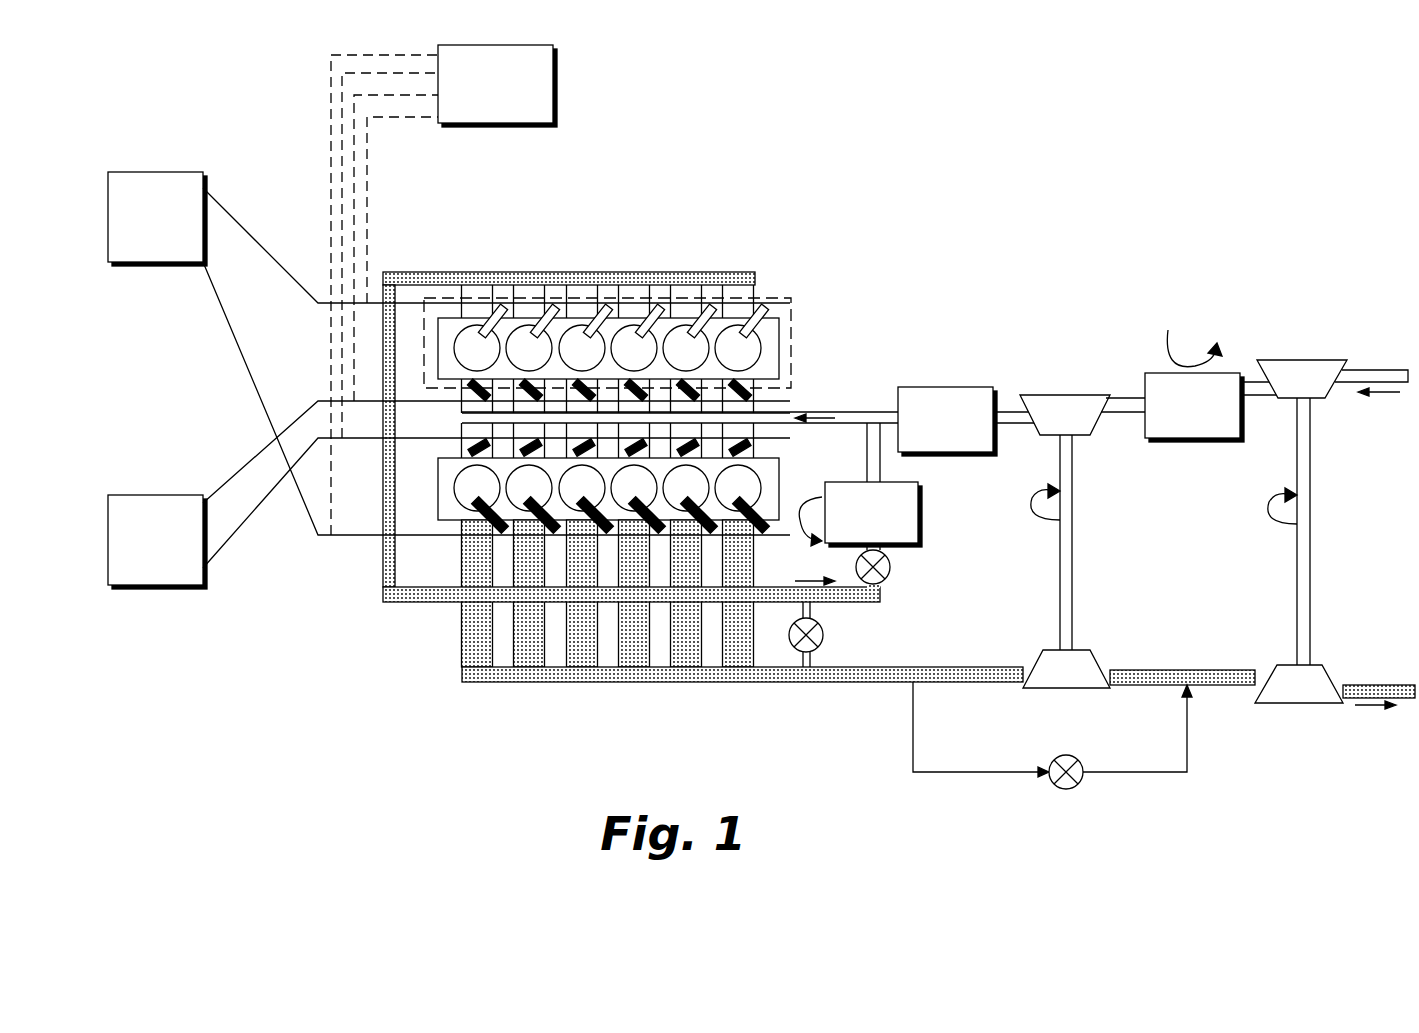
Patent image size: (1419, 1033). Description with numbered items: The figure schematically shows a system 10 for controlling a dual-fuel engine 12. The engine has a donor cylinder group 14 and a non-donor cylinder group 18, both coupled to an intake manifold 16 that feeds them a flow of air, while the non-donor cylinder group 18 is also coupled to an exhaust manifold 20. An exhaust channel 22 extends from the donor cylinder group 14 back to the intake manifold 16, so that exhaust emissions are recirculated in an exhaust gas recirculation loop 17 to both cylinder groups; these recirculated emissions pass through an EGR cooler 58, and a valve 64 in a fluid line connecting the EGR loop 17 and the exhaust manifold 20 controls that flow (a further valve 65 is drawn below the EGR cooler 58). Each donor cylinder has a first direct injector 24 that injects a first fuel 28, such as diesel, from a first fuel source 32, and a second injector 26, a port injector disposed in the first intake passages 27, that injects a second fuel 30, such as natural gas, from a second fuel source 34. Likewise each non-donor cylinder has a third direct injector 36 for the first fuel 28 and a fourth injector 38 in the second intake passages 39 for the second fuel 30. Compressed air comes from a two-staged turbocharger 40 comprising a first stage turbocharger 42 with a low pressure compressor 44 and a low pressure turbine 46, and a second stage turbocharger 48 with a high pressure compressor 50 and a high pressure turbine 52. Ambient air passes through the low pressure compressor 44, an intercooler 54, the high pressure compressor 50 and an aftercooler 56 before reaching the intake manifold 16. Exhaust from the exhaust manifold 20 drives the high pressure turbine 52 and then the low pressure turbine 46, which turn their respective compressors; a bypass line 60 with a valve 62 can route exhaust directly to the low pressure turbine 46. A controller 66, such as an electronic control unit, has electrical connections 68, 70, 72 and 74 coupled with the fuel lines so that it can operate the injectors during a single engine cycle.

The system 10 is at (1258, 214).
The dual-fuel engine 12 is at (748, 243).
The donor cylinder group 14 is at (791, 298).
The intake manifold 16 is at (855, 412).
The exhaust gas recirculation loop 17 is at (345, 640).
The non-donor cylinder group 18 is at (782, 469).
The exhaust manifold 20 is at (665, 683).
The exhaust channel 22 is at (513, 272).
The first direct injector 24 is at (757, 327).
The second injector 26 is at (757, 396).
The first intake passages 27 is at (452, 407).
The first fuel 28 is at (247, 228).
The second fuel 30 is at (258, 454).
The first fuel source 32 is at (180, 172).
The second fuel source 34 is at (172, 495).
The third direct injector 36 is at (773, 528).
The fourth injector 38 is at (760, 448).
The second intake passages 39 is at (452, 447).
The two-staged turbocharger 40 is at (1354, 514).
The first stage turbocharger 42 is at (1257, 357).
The low pressure compressor 44 is at (1325, 399).
The low pressure turbine 46 is at (1272, 665).
The second stage turbocharger 48 is at (1020, 392).
The high pressure compressor 50 is at (1040, 434).
The high pressure turbine 52 is at (1043, 650).
The intercooler 54 is at (1145, 373).
The aftercooler 56 is at (960, 387).
The EGR cooler 58 is at (918, 497).
The high pressure turbine bypass line 60 is at (913, 728).
The valve 62 is at (1064, 789).
The valve 64 is at (823, 635).
The EGR valve 65 is at (890, 568).
The controller 66 is at (553, 72).
The electrical connection 68 is at (367, 160).
The electrical connection 70 is at (354, 188).
The electrical connection 72 is at (342, 148).
The electrical connection 74 is at (331, 118).